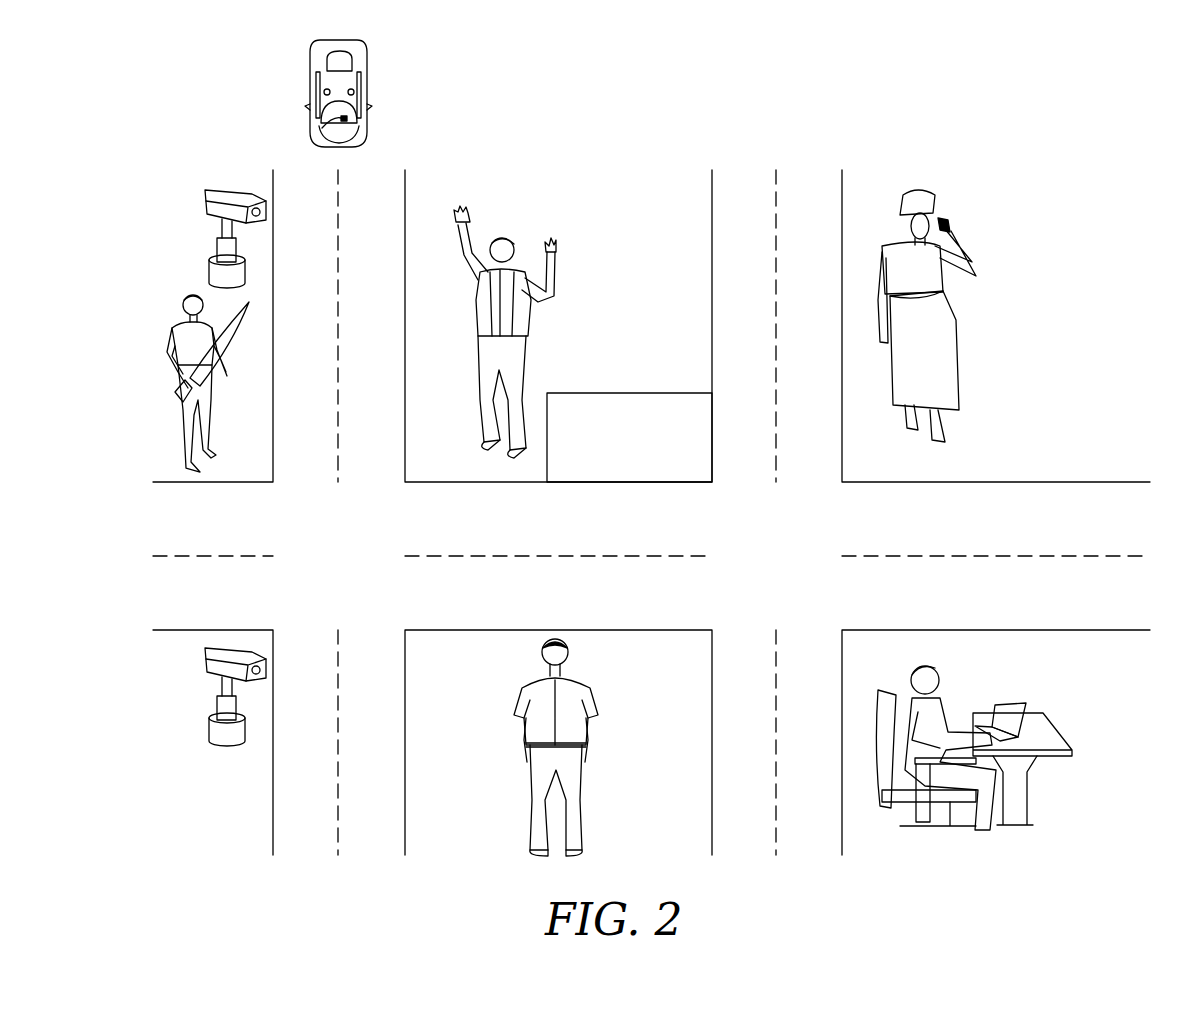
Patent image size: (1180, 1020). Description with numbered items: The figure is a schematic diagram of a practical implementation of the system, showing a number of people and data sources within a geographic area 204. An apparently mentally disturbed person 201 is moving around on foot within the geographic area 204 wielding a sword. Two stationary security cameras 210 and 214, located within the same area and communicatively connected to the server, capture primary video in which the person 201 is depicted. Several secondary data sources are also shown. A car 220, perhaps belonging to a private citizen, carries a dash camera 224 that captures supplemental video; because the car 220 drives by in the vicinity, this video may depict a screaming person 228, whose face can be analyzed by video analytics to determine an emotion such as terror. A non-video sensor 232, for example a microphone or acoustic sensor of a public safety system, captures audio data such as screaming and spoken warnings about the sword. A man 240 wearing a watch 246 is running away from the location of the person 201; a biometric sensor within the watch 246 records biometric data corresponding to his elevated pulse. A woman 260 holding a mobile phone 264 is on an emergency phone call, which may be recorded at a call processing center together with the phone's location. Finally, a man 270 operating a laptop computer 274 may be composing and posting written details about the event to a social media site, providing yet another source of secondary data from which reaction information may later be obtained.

The person 201 is at (170, 342).
The geographic area 204 is at (159, 38).
The security camera 210 is at (208, 270).
The security camera 214 is at (228, 745).
The car 220 is at (368, 82).
The dash camera 224 is at (347, 118).
The screaming person 228 is at (510, 236).
The non-video sensor 232 is at (594, 392).
The man 240 is at (522, 730).
The watch 246 is at (588, 746).
The woman 260 is at (950, 320).
The mobile phone 264 is at (950, 232).
The man 270 is at (933, 668).
The laptop computer 274 is at (1017, 703).